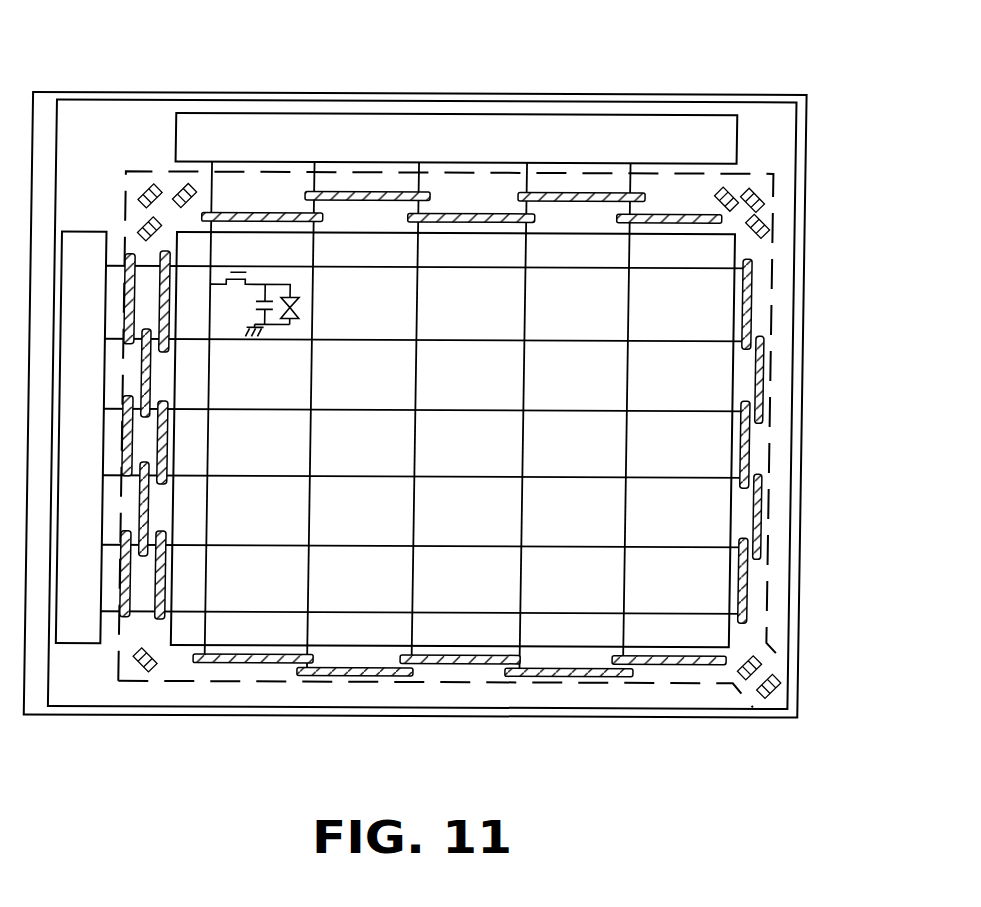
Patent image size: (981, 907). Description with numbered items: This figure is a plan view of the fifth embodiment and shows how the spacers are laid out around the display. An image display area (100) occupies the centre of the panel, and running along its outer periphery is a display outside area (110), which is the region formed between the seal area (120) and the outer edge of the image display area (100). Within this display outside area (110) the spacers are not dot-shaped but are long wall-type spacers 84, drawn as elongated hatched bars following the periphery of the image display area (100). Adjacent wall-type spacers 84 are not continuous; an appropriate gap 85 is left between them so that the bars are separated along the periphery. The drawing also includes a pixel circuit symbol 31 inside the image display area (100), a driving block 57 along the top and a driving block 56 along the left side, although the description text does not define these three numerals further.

The pixel switching element circuit 31 is at (230, 272).
The source driver circuit 57 is at (625, 124).
The gate driver circuit 56 is at (80, 630).
The seal area 120 is at (775, 142).
The display outside area 110 is at (775, 187).
The image display area 100 is at (426, 419).
The gap 85 is at (755, 248).
The wall-type spacers 84 is at (748, 298).